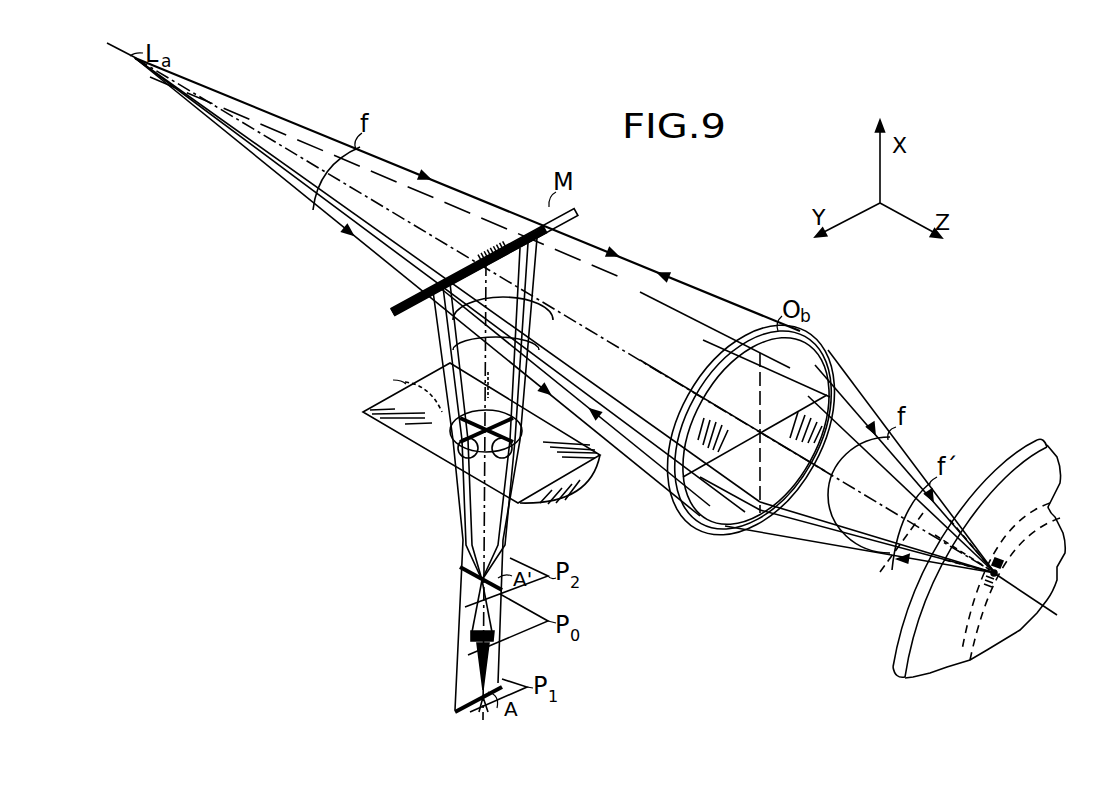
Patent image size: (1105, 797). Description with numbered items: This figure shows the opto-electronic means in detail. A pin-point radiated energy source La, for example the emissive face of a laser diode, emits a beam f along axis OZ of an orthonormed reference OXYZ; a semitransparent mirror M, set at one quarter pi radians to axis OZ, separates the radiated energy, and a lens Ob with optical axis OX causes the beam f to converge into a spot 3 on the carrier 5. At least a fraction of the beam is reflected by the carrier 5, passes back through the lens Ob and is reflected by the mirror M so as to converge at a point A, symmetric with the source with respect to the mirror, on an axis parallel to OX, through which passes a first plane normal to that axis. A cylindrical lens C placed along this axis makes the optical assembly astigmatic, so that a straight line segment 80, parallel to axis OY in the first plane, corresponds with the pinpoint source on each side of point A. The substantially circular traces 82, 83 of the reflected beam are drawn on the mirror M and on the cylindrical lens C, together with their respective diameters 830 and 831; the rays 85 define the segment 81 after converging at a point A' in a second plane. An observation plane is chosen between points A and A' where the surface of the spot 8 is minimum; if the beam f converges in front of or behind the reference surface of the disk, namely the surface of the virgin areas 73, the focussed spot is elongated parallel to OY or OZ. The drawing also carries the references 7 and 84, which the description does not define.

The spot 3 is at (997, 584).
The carrier 5 is at (1008, 457).
The object 7 is at (1052, 541).
The virgin areas 73 is at (996, 561).
The spot 8 is at (471, 636).
The straight line segment 80 is at (460, 705).
The segment 81 is at (462, 575).
The trace of the reflected beam 82 is at (474, 264).
The trace of the reflected beam 83 is at (453, 433).
The diameter 830 is at (458, 465).
The diameter 831 is at (511, 461).
The cylindrical lens 84 is at (548, 308).
The rays 85 is at (528, 343).